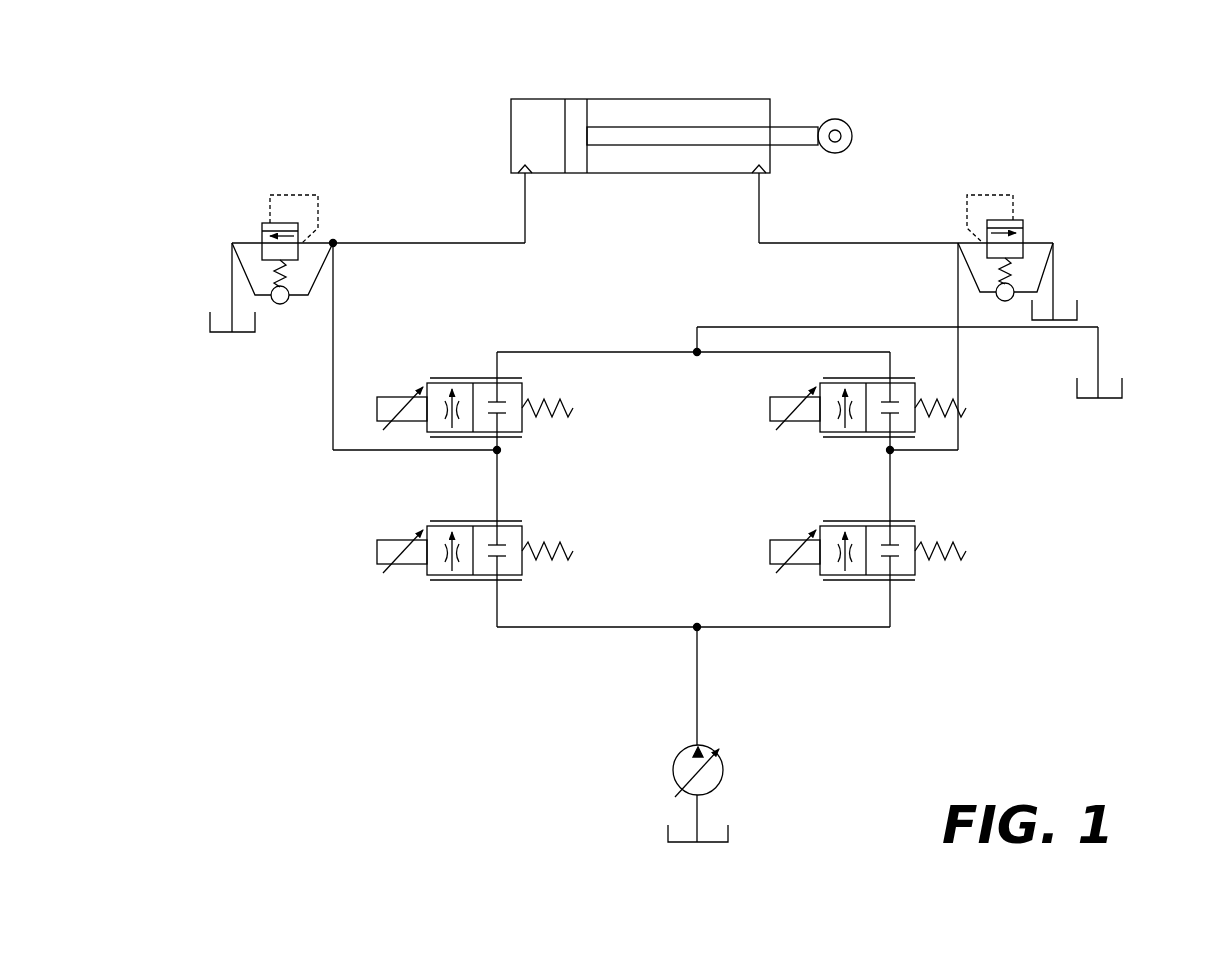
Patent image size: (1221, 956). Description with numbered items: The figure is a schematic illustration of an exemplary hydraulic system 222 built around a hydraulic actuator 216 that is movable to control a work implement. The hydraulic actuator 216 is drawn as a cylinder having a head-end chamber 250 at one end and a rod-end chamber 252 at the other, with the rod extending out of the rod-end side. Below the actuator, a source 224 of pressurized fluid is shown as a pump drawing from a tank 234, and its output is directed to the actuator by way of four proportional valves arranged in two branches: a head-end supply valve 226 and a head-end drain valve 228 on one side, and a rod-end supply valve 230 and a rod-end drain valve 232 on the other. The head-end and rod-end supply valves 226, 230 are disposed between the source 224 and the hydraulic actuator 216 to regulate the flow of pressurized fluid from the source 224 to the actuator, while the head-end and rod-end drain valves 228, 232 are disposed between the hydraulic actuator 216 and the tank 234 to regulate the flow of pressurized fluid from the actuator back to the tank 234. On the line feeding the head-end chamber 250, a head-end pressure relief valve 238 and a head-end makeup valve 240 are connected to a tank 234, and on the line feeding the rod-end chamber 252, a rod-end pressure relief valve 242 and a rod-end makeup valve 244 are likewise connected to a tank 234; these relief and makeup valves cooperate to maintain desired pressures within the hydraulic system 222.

The hydraulic actuator 216 is at (638, 107).
The hydraulic system 222 is at (1096, 104).
The source of pressurized fluid 224 is at (724, 768).
The head-end supply valve 226 is at (398, 603).
The head-end drain valve 228 is at (484, 356).
The rod-end supply valve 230 is at (947, 603).
The rod-end drain valve 232 is at (758, 402).
The tank 234 is at (208, 318).
The head-end pressure relief valve 238 is at (319, 266).
The head-end makeup valve 240 is at (288, 303).
The rod-end pressure relief valve 242 is at (996, 241).
The rod-end makeup valve 244 is at (1000, 300).
The head-end chamber 250 is at (520, 127).
The rod-end chamber 252 is at (753, 112).